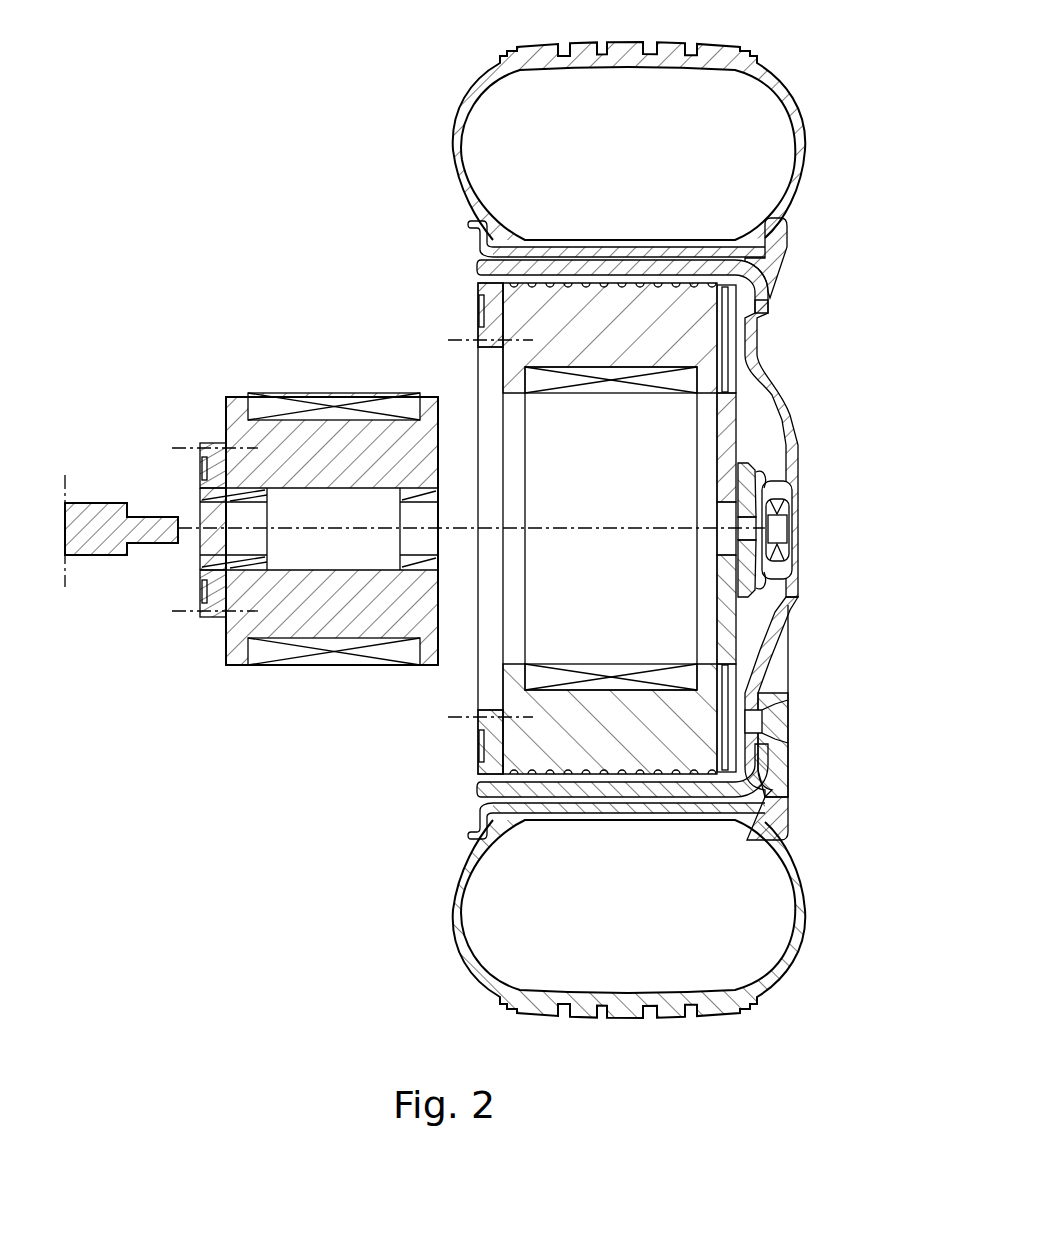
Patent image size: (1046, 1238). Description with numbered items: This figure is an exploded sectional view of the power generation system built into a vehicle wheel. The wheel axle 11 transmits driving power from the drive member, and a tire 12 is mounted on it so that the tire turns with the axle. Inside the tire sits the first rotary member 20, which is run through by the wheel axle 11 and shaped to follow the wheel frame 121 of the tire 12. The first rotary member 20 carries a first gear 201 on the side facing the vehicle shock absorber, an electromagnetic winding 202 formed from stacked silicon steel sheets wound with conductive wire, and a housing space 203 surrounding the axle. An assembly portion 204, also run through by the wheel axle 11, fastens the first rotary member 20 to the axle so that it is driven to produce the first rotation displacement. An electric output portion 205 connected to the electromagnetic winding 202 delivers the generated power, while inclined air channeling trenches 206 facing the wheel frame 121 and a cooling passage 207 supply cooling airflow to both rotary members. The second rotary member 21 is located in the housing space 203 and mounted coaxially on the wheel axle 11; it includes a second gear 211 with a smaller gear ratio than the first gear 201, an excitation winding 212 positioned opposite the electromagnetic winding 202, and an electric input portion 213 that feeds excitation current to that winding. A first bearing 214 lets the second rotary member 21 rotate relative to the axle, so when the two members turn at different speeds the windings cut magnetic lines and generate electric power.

The wheel axle 11 is at (87, 557).
The tire 12 is at (450, 178).
The wheel frame 121 is at (770, 302).
The first rotary member 20 is at (478, 765).
The first gear 201 is at (478, 725).
The electromagnetic winding 202 is at (535, 340).
The housing space 203 is at (565, 422).
The assembly portion 204 is at (730, 638).
The electric output portion 205 is at (480, 310).
The air channeling trenches 206 is at (478, 266).
The cooling passage 207 is at (725, 727).
The second rotary member 21 is at (236, 672).
The second gear 211 is at (224, 442).
The excitation winding 212 is at (283, 403).
The electric input portion 213 is at (202, 468).
The first bearing 214 is at (220, 570).